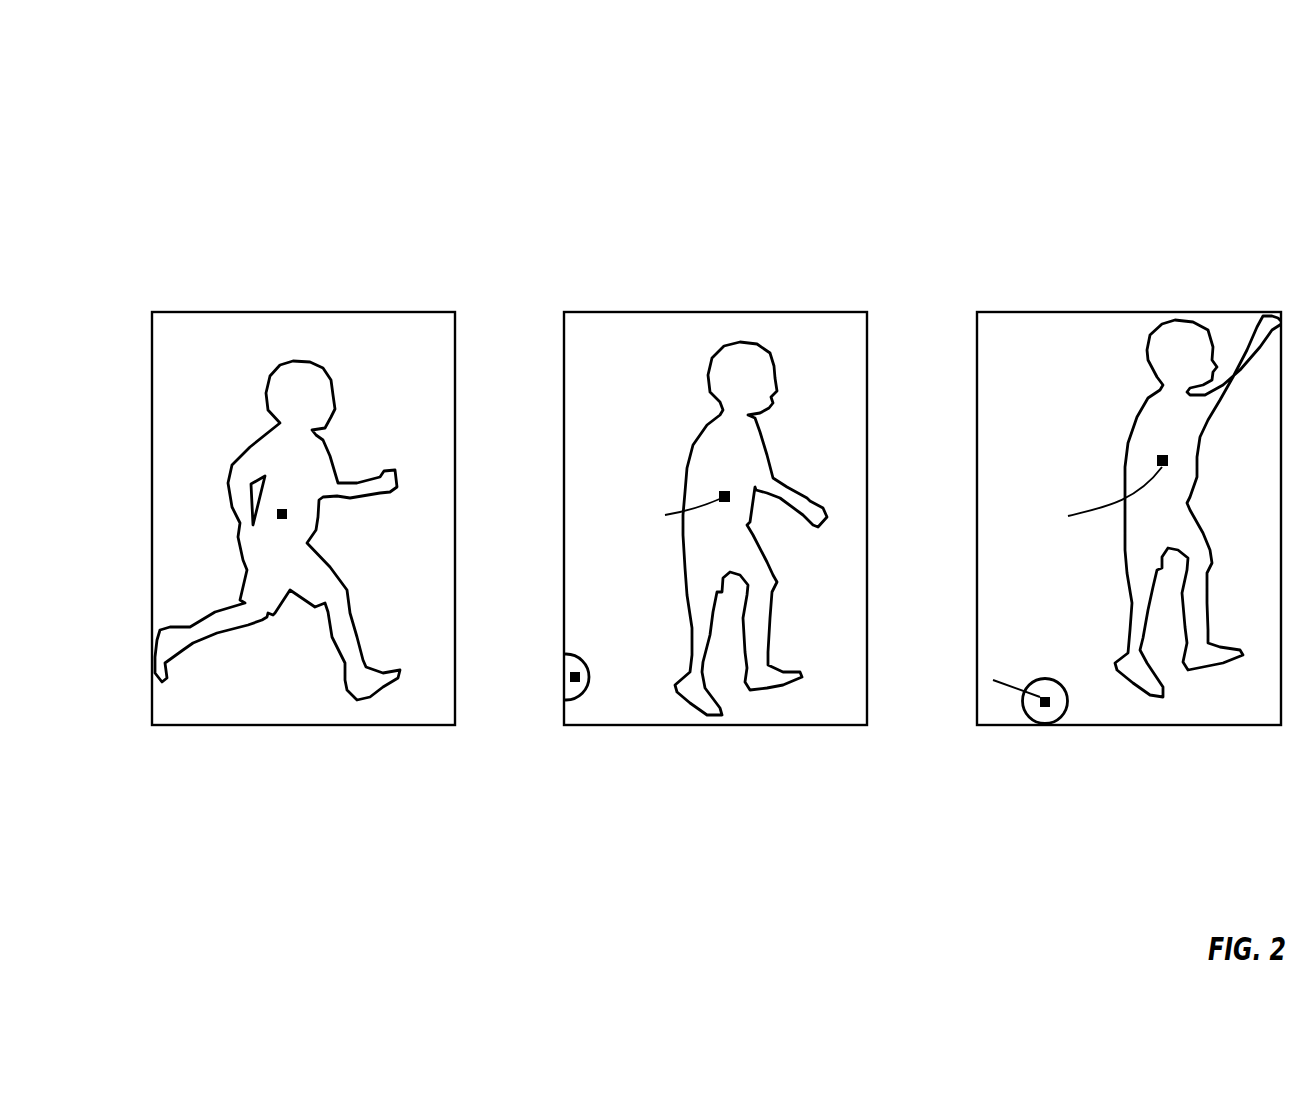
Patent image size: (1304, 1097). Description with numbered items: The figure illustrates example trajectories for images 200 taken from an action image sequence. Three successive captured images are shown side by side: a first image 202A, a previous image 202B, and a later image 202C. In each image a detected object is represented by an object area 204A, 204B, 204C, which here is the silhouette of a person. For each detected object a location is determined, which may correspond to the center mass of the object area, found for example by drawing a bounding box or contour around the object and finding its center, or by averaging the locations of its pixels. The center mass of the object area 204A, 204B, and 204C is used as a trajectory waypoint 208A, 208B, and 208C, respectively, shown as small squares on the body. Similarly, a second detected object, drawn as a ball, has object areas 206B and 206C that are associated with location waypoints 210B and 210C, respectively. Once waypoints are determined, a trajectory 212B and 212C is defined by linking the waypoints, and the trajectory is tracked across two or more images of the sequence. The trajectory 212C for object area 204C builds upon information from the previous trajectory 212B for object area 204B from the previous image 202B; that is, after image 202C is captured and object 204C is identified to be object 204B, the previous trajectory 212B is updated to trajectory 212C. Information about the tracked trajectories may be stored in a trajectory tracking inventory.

The images 200 is at (170, 84).
The image 202A is at (287, 493).
The previous image 202B is at (697, 493).
The image 202C is at (1112, 493).
The object area 204A is at (277, 530).
The object area 204B is at (710, 528).
The object area 204C is at (1158, 506).
The object area 206B is at (599, 658).
The object area 206C is at (1068, 685).
The trajectory waypoint 208A is at (331, 483).
The trajectory waypoint 208B is at (775, 477).
The trajectory waypoint 208C is at (1214, 441).
The location waypoint 210B is at (614, 663).
The location waypoint 210C is at (1058, 691).
The trajectory 212B is at (652, 489).
The trajectory 212C is at (1083, 488).